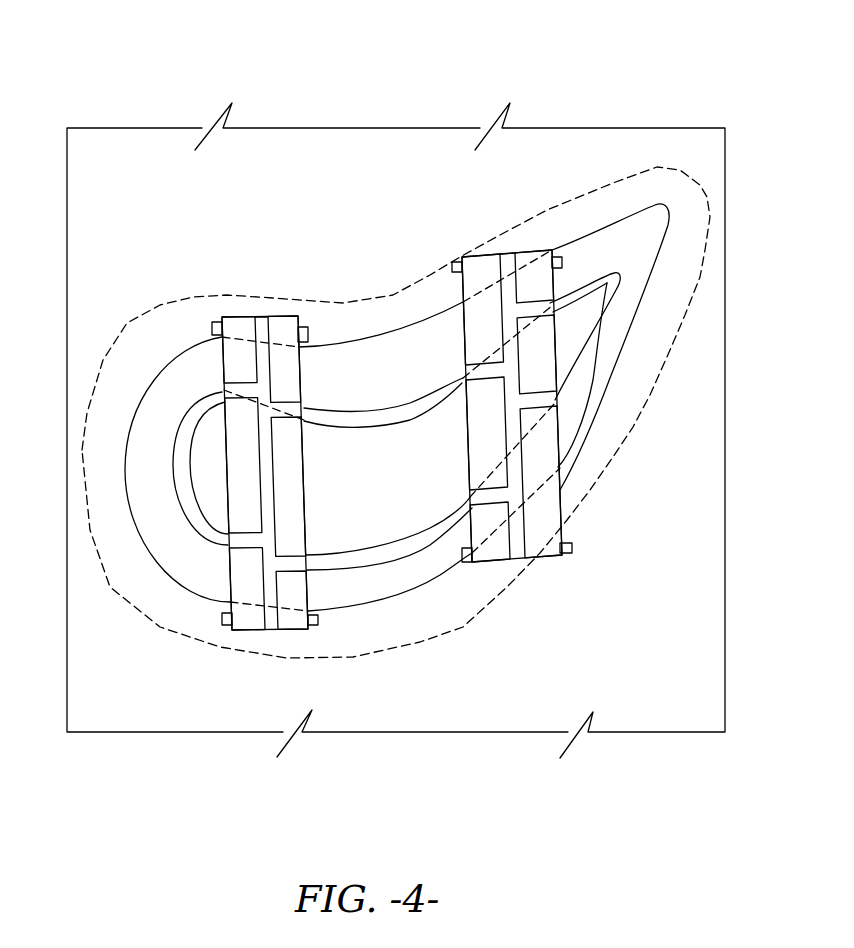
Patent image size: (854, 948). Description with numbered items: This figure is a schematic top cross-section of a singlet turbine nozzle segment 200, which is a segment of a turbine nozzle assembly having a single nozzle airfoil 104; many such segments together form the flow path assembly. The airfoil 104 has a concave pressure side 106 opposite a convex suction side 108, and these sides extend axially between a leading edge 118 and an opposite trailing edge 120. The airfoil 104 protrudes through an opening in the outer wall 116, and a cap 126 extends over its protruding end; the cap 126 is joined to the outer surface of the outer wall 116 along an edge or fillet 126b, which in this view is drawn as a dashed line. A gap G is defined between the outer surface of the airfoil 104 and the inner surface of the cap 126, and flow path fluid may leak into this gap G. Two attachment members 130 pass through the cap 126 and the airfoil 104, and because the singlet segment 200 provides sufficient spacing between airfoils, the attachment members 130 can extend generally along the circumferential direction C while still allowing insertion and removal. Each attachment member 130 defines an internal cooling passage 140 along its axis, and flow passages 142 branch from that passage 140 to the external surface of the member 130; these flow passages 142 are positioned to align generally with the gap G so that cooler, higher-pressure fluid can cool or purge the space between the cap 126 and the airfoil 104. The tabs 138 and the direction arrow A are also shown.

The singlet turbine nozzle segment 200 is at (171, 89).
The outer wall 116 is at (615, 142).
The trailing edge 120 is at (613, 267).
The internal cooling passage 140 is at (257, 316).
The attachment member 130 is at (460, 260).
The tab 138 is at (208, 330).
The cap 126 is at (168, 538).
The edge or fillet 126b is at (125, 337).
The flow passage 142 is at (221, 392).
The leading edge 118 is at (180, 443).
The gap G is at (197, 513).
The pressure side 106 is at (391, 406).
The nozzle airfoil 104 is at (367, 535).
The suction side 108 is at (400, 548).
The circumferential direction C is at (29, 266).
The axial direction A is at (532, 817).